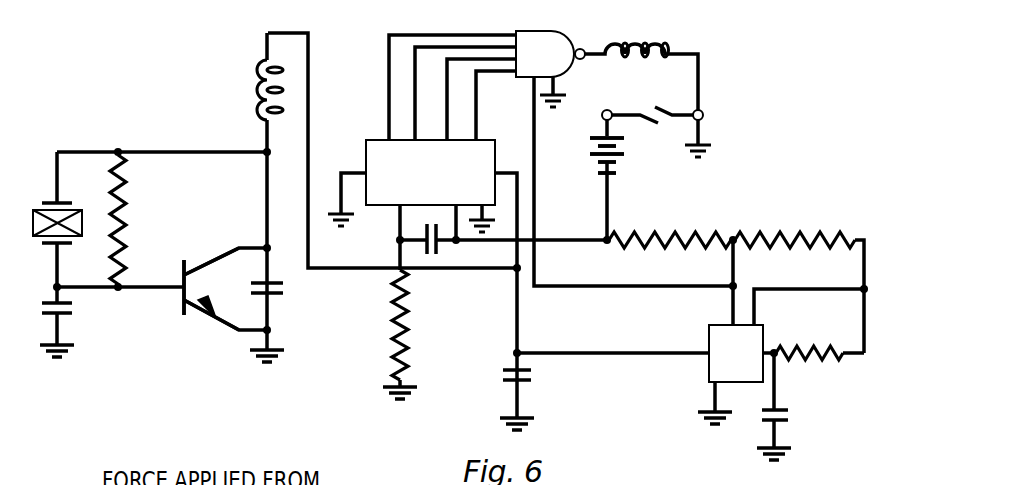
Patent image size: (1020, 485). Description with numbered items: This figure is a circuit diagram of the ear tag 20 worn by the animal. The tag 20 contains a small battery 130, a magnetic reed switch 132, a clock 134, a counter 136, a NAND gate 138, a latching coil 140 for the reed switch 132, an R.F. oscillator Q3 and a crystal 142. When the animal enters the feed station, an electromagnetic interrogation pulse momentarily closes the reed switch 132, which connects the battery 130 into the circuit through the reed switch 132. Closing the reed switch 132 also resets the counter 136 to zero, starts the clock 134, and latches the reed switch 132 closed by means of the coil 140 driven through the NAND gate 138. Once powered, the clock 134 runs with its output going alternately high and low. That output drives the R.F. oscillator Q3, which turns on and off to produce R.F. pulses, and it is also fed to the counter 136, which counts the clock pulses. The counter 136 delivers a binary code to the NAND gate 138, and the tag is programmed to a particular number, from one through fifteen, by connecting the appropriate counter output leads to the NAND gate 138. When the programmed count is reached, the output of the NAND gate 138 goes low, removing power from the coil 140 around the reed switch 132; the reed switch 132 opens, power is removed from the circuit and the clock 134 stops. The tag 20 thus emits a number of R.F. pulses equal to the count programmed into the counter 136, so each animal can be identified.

The crystal 142 is at (43, 197).
The R.F. oscillator Q3 is at (205, 265).
The counter 136 is at (373, 148).
The NAND gate 138 is at (548, 40).
The latching coil 140 is at (640, 45).
The magnetic reed switch 132 is at (665, 110).
The battery 130 is at (622, 168).
The clock 134 is at (718, 368).
The tag 20 is at (740, 57).